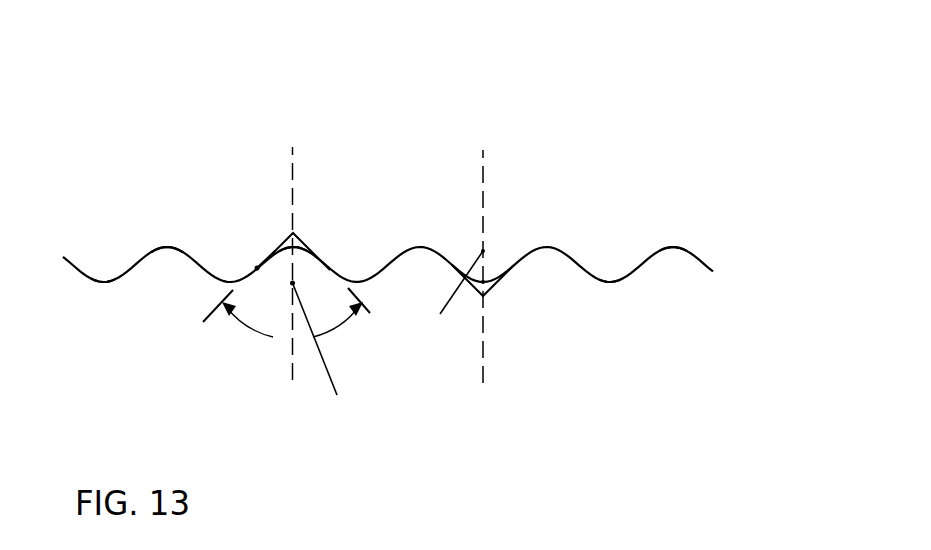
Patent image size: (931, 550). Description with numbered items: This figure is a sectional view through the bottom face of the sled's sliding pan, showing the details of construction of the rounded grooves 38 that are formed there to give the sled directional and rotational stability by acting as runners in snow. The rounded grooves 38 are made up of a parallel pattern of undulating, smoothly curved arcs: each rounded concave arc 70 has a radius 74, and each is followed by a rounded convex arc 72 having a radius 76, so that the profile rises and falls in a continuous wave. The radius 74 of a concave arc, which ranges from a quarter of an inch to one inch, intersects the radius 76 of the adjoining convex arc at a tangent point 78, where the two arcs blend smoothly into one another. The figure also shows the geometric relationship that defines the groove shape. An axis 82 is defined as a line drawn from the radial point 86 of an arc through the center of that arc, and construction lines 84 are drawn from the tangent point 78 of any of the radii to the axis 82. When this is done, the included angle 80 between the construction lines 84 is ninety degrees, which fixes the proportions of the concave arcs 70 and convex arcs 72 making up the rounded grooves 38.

The rounded grooves 38 is at (497, 70).
The rounded concave arc 70 is at (157, 247).
The rounded convex arc 72 is at (100, 282).
The radius 74 is at (291, 268).
The radius 76 is at (483, 281).
The tangent point 78 is at (257, 268).
The included angle 80 is at (292, 315).
The axis 82 is at (293, 233).
The construction lines 84 is at (216, 310).
The radial point 86 is at (337, 395).